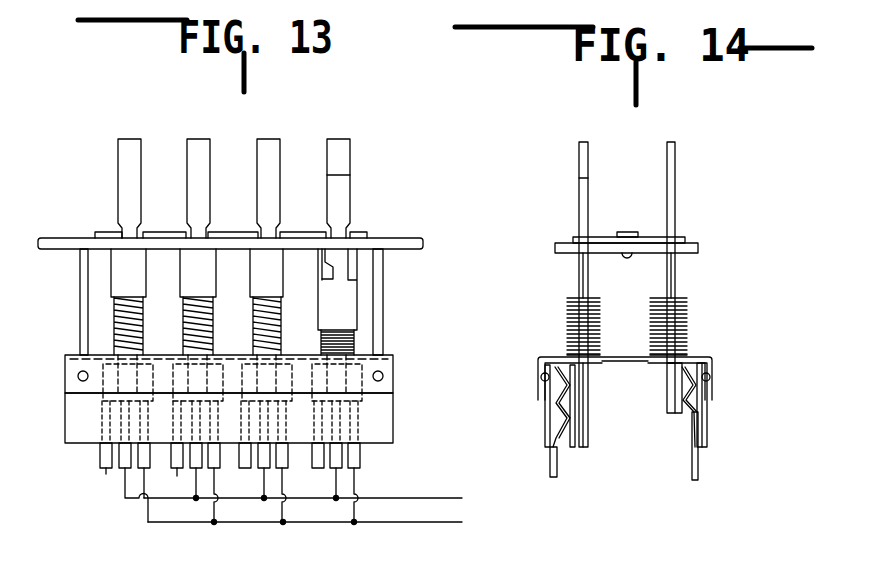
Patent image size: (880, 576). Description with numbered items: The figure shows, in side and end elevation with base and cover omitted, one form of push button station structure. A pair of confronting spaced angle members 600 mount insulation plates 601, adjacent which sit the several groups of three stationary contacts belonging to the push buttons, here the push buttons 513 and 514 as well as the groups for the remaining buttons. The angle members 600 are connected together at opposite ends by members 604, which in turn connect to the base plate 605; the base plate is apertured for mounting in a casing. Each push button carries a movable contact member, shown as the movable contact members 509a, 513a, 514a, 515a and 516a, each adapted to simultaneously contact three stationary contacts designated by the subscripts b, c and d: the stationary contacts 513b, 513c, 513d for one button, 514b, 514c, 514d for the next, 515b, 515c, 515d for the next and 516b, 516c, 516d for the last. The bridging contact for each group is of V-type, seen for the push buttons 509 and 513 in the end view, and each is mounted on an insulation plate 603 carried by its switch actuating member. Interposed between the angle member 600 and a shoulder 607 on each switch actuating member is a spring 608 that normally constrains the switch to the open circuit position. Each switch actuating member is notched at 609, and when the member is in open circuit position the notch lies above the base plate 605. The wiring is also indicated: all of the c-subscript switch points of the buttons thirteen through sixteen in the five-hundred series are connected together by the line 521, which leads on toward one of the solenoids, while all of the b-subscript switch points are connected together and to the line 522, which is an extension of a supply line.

In FIG. 14, the push button 509 is at (690, 412).
In FIG. 13, the movable contact member 509a is at (341, 147).
In FIG. 14, the movable contact member 509a is at (673, 162).
In FIG. 14, the push button 513 is at (555, 450).
In FIG. 13, the movable contact member 513a is at (340, 186).
In FIG. 14, the movable contact member 513a is at (582, 195).
In FIG. 13, the stationary contact 513b is at (360, 456).
In FIG. 13, the stationary contact 513c is at (343, 470).
In FIG. 13, the stationary contact 513d is at (317, 470).
In FIG. 14, the push button 514 is at (557, 363).
In FIG. 13, the movable contact member 514a is at (270, 157).
In FIG. 14, the movable contact member 514a is at (580, 152).
In FIG. 13, the stationary contact 514b is at (287, 470).
In FIG. 13, the stationary contact 514c is at (262, 470).
In FIG. 13, the stationary contact 514d is at (245, 470).
In FIG. 13, the movable contact member 515a is at (200, 147).
In FIG. 13, the stationary contact 515b is at (213, 470).
In FIG. 13, the stationary contact 515c is at (192, 470).
In FIG. 13, the stationary contact 515d is at (174, 470).
In FIG. 13, the movable contact member 516a is at (130, 142).
In FIG. 13, the stationary contact 516b is at (138, 470).
In FIG. 13, the stationary contact 516c is at (120, 470).
In FIG. 13, the stationary contact 516d is at (100, 455).
In FIG. 13, the line 521 is at (430, 498).
In FIG. 13, the line 522 is at (438, 522).
In FIG. 13, the angle members 600 is at (390, 364).
In FIG. 14, the angle members 600 is at (540, 360).
In FIG. 13, the insulation plates 601 is at (385, 417).
In FIG. 14, the insulation plates 601 is at (545, 415).
In FIG. 14, the insulation plate 603 is at (573, 447).
In FIG. 13, the members 604 is at (81, 288).
In FIG. 14, the members 604 is at (655, 313).
In FIG. 13, the base plate 605 is at (408, 243).
In FIG. 14, the base plate 605 is at (695, 250).
In FIG. 13, the shoulder 607 is at (144, 296).
In FIG. 14, the shoulder 607 is at (597, 338).
In FIG. 13, the spring 608 is at (115, 320).
In FIG. 14, the spring 608 is at (573, 303).
In FIG. 13, the notch 609 is at (234, 289).